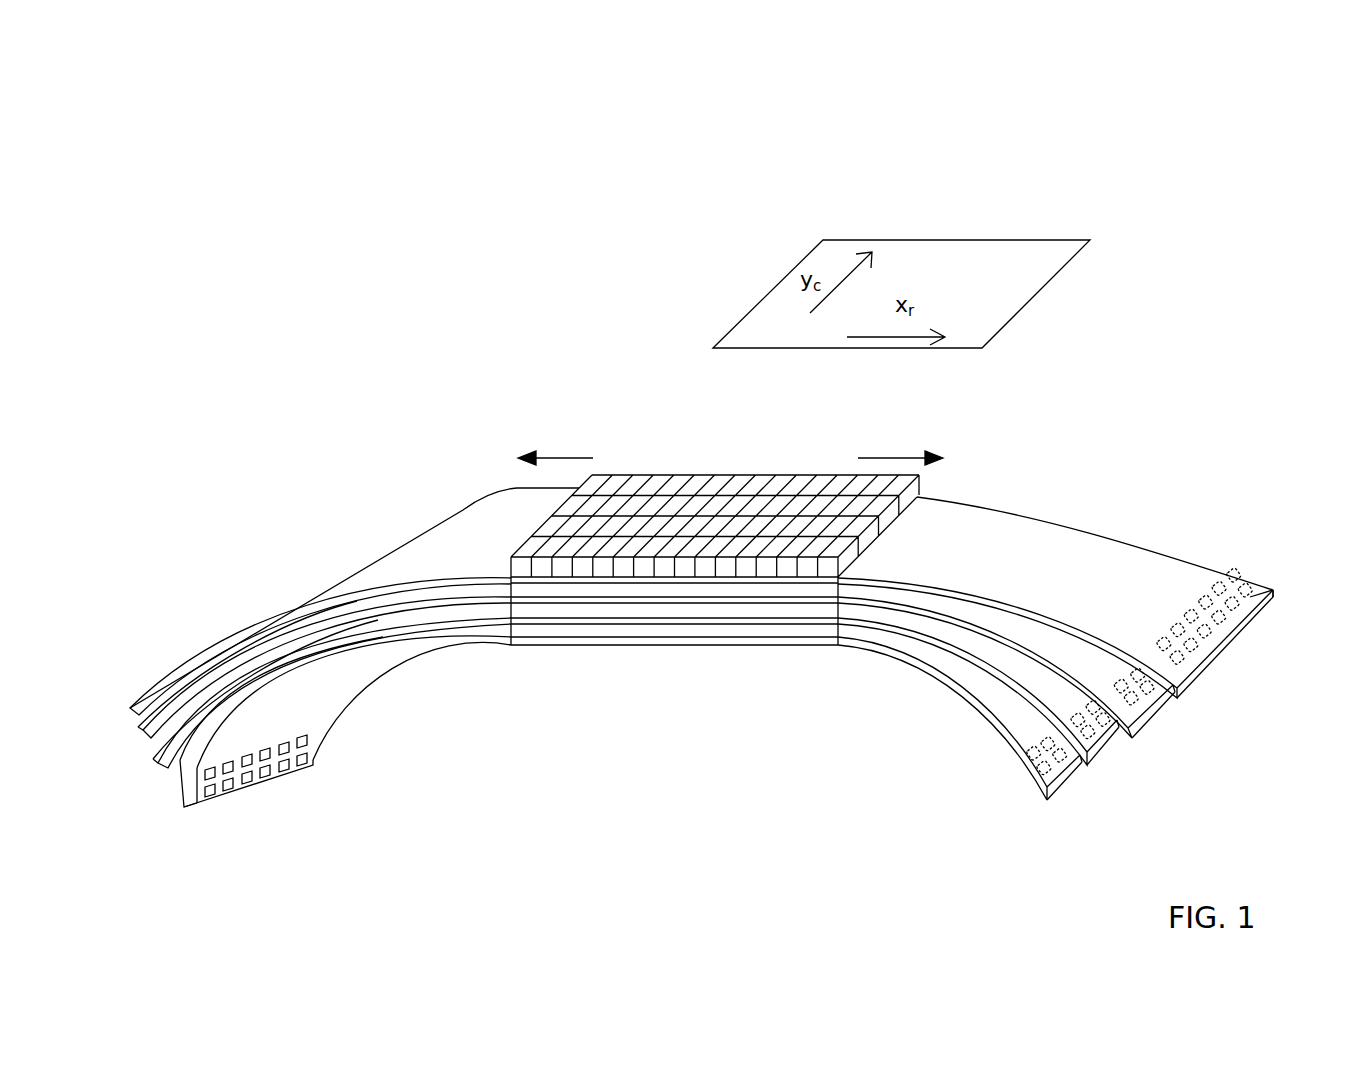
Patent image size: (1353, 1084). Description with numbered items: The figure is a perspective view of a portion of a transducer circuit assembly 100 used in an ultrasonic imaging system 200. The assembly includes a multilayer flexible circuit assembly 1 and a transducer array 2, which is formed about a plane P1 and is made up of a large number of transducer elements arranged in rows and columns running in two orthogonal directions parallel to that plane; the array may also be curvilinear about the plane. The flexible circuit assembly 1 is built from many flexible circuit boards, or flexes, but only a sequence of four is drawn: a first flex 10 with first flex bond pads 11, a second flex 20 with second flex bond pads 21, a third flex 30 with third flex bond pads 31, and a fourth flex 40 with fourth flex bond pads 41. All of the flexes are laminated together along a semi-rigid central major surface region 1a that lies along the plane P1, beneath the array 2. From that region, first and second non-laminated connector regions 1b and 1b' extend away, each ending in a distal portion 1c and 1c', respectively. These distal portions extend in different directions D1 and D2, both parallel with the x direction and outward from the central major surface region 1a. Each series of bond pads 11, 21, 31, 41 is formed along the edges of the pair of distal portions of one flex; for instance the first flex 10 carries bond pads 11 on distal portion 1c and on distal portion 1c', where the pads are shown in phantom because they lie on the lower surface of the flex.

The ultrasonic imaging system 200 is at (1304, 103).
The transducer circuit assembly 100 is at (1117, 300).
The plane P1 is at (1018, 275).
The multilayer flexible circuit assembly 1 is at (601, 626).
The central major surface region 1a is at (676, 677).
The first non-laminated region (connector region) 1b is at (354, 554).
The second non-laminated region (connector region) 1b' is at (1183, 497).
The distal portion 1c is at (146, 824).
The distal portion 1c' is at (1291, 552).
The transducer array 2 is at (692, 478).
The first direction D1 is at (557, 457).
The second direction D2 is at (897, 457).
The first flex 10 is at (1007, 710).
The first flex bond pads 11 is at (234, 789).
The second flex 20 is at (1043, 682).
The second flex bond pads 21 is at (1093, 737).
The third flex 30 is at (1018, 625).
The third flex bond pads 31 is at (1140, 697).
The fourth flex 40 is at (1127, 567).
The fourth flex bond pads 41 is at (1190, 648).